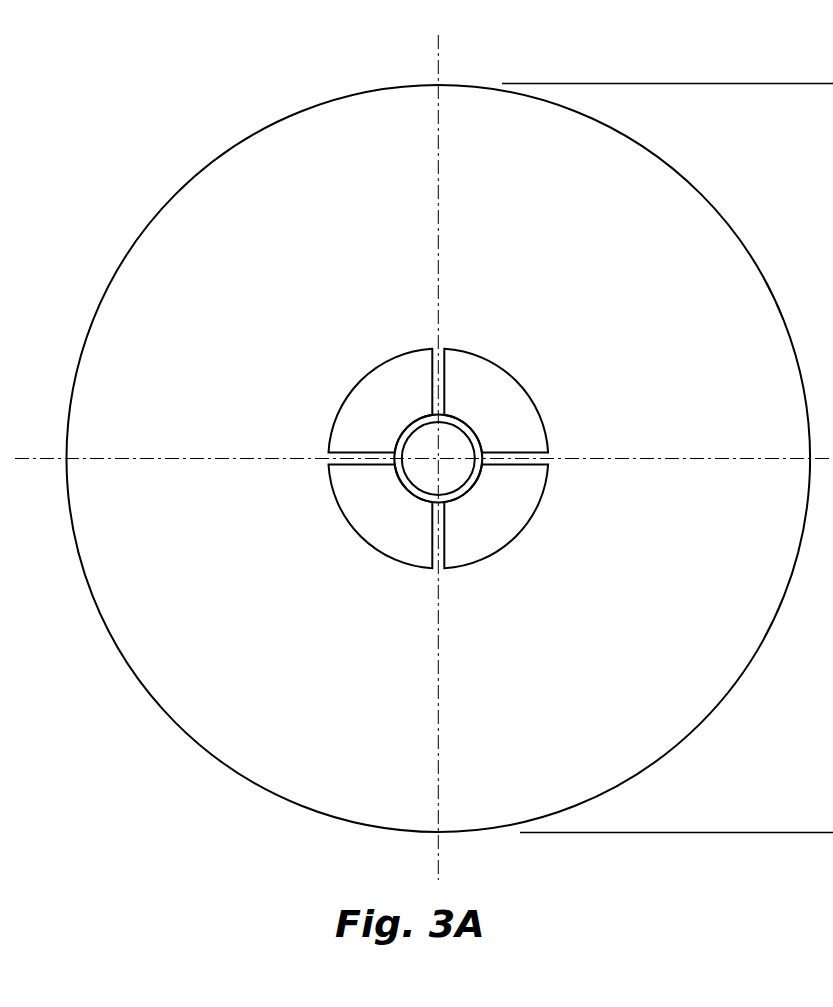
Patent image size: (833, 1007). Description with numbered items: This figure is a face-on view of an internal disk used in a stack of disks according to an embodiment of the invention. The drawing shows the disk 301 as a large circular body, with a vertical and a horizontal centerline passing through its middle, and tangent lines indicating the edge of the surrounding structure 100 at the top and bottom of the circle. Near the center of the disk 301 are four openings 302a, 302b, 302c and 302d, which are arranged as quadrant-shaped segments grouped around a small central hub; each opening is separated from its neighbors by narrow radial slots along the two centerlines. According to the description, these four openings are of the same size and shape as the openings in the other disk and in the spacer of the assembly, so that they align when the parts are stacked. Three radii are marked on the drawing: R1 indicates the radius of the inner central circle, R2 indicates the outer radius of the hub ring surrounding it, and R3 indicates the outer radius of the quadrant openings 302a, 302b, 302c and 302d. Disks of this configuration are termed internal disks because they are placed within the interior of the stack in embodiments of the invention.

The wafer / substrate 100 is at (473, 84).
The disk 301 is at (452, 468).
The opening 302a is at (387, 389).
The opening 302b is at (500, 388).
The opening 302c is at (353, 493).
The opening 302d is at (470, 545).
The inner radius R1 is at (438, 458).
The hub outer radius R2 is at (438, 458).
The segment outer radius R3 is at (438, 458).